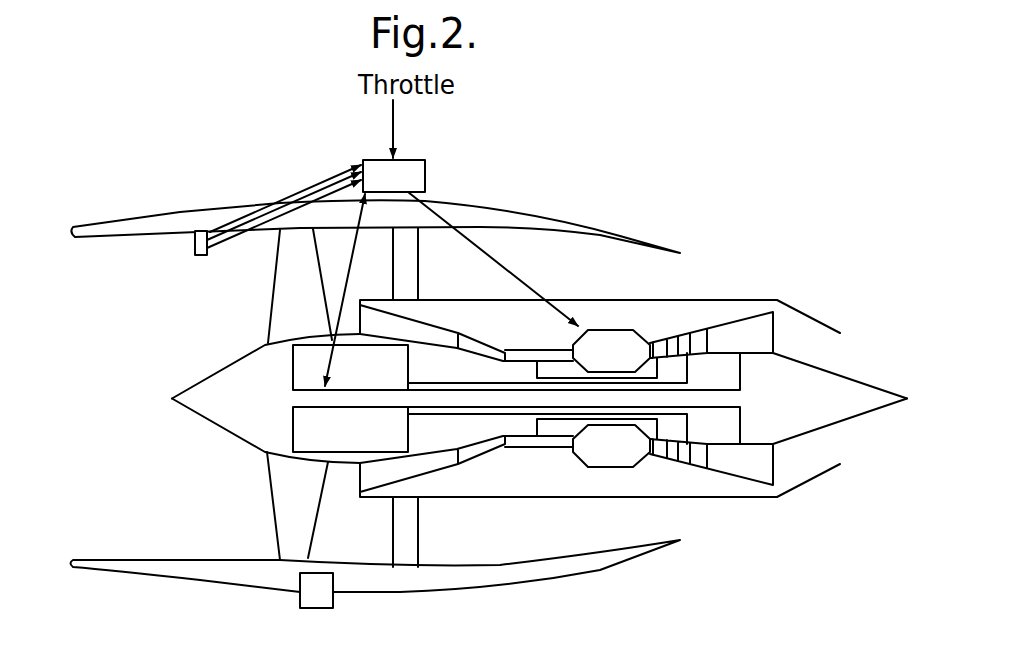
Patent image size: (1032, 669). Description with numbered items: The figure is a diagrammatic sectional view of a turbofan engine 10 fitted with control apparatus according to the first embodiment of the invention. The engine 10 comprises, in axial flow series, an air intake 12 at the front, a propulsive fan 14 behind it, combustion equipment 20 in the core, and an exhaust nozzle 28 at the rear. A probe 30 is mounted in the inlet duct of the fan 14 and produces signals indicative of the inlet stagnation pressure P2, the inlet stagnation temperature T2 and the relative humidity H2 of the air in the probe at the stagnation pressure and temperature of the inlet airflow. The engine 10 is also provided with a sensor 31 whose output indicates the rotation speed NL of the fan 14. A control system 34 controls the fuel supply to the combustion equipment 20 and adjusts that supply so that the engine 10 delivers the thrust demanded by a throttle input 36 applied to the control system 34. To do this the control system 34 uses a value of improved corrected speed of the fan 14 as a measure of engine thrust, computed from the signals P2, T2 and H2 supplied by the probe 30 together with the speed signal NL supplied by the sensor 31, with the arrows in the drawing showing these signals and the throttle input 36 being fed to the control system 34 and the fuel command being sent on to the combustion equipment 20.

The turbofan engine 10 is at (619, 181).
The air intake 12 is at (137, 422).
The propulsive fan 14 is at (285, 523).
The combustion equipment 20 is at (631, 326).
The exhaust nozzle 28 is at (829, 356).
The probe 30 is at (193, 241).
The sensor 31 is at (322, 392).
The control system 34 is at (410, 172).
The throttle input 36 is at (393, 113).
The fan rotation speed signal NL is at (355, 268).
The inlet stagnation pressure signal P2 is at (233, 218).
The inlet stagnation temperature signal T2 is at (277, 204).
The relative humidity signal H2 is at (334, 190).